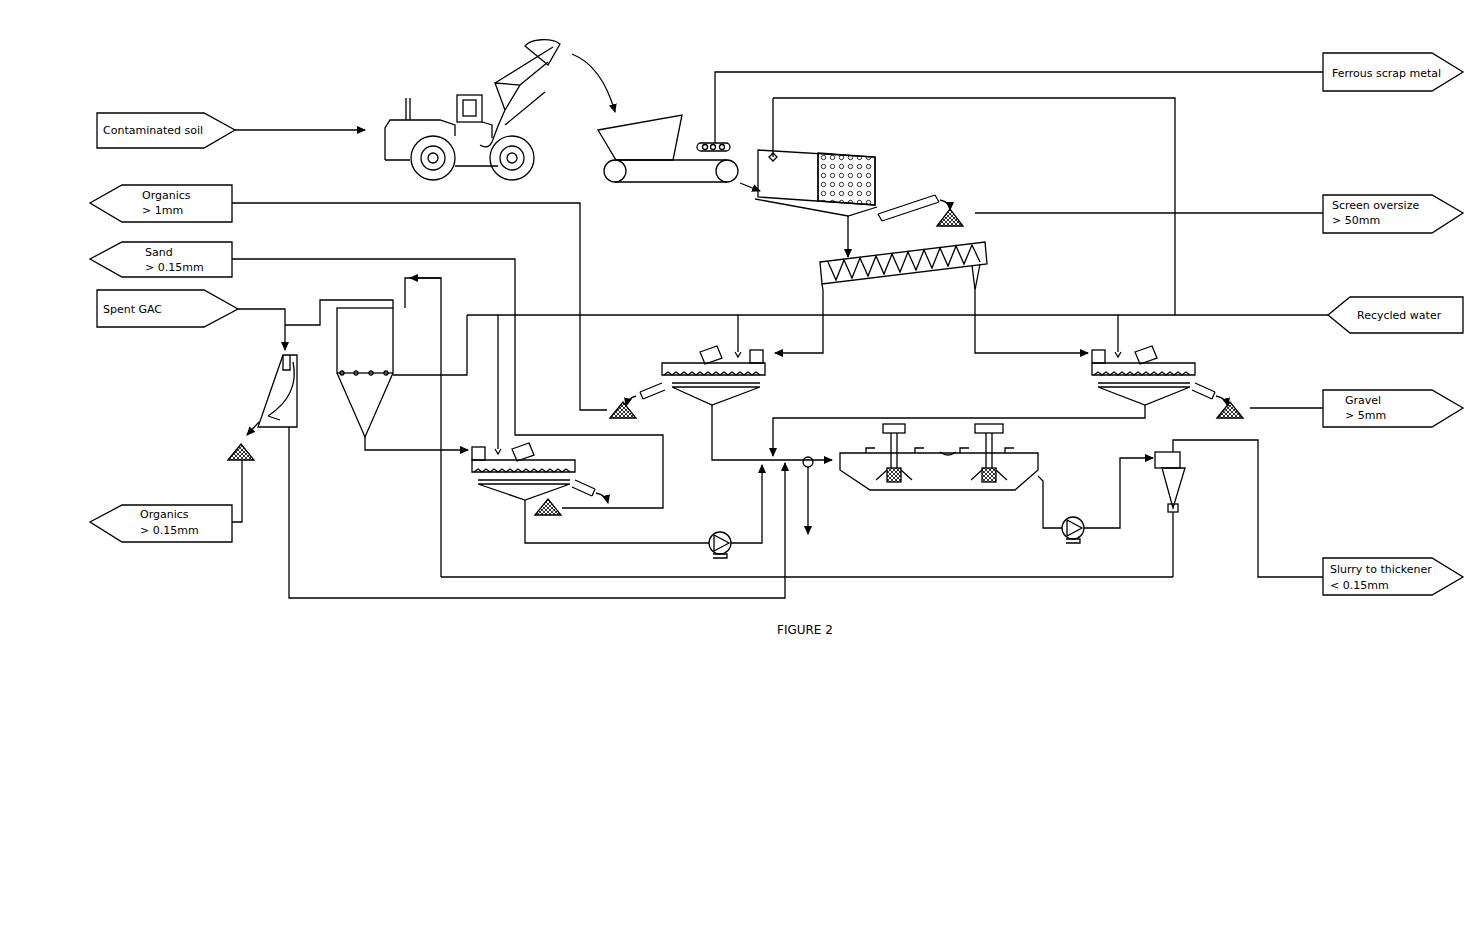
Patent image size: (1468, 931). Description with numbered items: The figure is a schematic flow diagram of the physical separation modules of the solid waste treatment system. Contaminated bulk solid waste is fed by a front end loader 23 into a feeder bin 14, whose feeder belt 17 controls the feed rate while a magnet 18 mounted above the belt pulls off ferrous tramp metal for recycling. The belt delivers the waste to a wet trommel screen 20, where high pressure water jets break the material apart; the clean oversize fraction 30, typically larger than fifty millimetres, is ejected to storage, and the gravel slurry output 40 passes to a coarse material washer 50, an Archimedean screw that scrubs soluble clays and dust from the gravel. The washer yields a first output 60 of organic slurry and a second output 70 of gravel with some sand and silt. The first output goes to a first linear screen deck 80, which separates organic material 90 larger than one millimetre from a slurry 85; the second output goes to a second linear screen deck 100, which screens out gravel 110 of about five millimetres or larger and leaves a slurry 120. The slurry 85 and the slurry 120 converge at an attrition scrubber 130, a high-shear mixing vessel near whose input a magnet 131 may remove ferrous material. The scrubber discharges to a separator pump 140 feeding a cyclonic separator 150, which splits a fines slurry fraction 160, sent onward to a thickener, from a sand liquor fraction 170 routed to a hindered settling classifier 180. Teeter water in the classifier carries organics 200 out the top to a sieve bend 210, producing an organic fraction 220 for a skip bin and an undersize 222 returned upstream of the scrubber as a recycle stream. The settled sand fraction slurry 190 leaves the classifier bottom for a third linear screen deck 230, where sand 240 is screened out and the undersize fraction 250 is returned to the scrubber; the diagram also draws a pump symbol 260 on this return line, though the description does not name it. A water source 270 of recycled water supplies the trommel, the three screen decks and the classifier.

The feeder bin 14 is at (664, 120).
The feeder belt 17 is at (663, 174).
The magnet 18 is at (722, 142).
The wet trommel screen 20 is at (965, 206).
The front end loader 23 is at (471, 106).
The oversize fraction 30 is at (1100, 210).
The gravel slurry output 40 is at (838, 236).
The coarse material washer 50 is at (903, 278).
The first output 60 is at (809, 335).
The second output 70 is at (1031, 334).
The first linear screen deck 80 is at (687, 366).
The slurry 85 is at (772, 432).
The organic material 90 is at (419, 306).
The second linear screen deck 100 is at (1167, 366).
The gravel 110 is at (1286, 400).
The slurry 120 is at (959, 429).
The attrition scrubber 130 is at (939, 465).
The magnet 131 is at (822, 498).
The separator pump 140 is at (1095, 508).
The cyclonic separator 150 is at (1186, 514).
The fines slurry fraction 160 is at (1248, 508).
The sand liquor fraction 170 is at (807, 568).
The hindered settling classifier 180 is at (382, 340).
The sand fraction slurry 190 is at (416, 453).
The organics 200 is at (339, 360).
The sieve bend 210 is at (270, 395).
The organic fraction 220 is at (233, 483).
The undersize 222 is at (537, 512).
The third linear screen deck 230 is at (540, 409).
The sand 240 is at (462, 383).
The undersize fraction 250 is at (576, 514).
The recycle pump 260 is at (643, 511).
The water source 270 is at (897, 304).